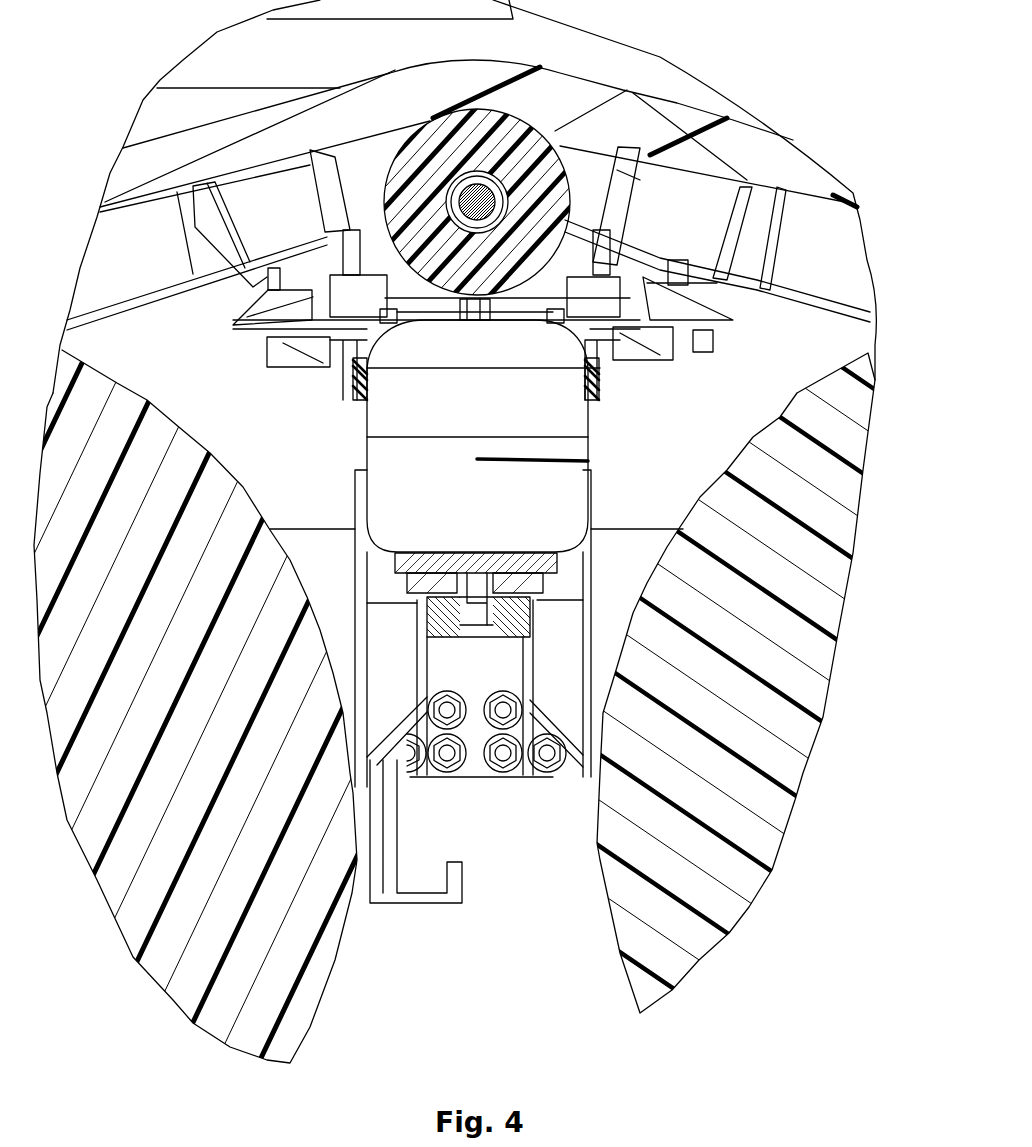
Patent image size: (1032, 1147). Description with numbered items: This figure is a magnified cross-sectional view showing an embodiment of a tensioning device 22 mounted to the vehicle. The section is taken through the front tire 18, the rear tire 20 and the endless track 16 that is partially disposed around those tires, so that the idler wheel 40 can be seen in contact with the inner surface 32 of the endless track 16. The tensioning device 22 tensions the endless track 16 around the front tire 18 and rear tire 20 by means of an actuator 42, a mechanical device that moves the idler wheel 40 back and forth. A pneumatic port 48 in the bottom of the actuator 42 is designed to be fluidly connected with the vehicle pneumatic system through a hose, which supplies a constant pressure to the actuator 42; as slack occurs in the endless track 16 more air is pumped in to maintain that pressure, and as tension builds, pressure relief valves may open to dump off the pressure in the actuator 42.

The endless track 16 is at (750, 160).
The front tire 18 is at (207, 942).
The rear tire 20 is at (677, 930).
The tensioning device 22 is at (482, 352).
The inner surface 32 is at (793, 197).
The idler wheel 40 is at (493, 147).
The actuator 42 is at (590, 462).
The pneumatic port 48 is at (474, 620).